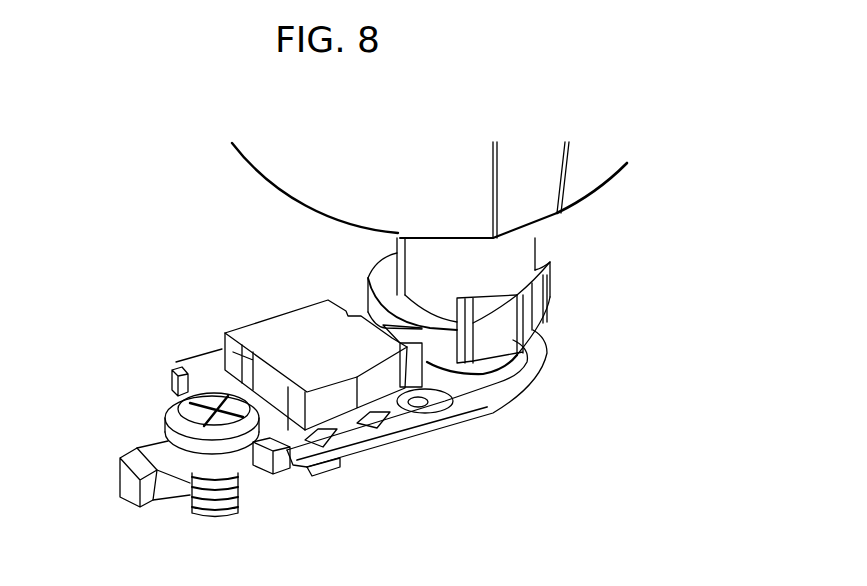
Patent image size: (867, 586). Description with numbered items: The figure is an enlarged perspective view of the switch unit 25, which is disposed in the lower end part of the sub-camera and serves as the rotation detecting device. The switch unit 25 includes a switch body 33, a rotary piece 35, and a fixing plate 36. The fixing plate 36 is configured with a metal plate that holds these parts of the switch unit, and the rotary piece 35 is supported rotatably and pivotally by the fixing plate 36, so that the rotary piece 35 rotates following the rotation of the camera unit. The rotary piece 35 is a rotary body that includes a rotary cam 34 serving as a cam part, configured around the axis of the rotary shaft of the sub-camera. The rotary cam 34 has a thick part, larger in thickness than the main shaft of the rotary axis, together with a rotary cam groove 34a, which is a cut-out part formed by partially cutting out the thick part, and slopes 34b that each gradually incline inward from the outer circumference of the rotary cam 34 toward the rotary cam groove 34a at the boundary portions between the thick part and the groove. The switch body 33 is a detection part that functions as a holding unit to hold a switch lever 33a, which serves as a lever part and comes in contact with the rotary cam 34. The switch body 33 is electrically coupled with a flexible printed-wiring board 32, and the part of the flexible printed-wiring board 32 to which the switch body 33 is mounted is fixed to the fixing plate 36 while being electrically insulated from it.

The switch unit 25 is at (487, 428).
The flexible printed-wiring board 32 is at (200, 363).
The switch body 33 is at (307, 322).
The switch lever 33a is at (417, 355).
The rotary cam 34 is at (555, 260).
The rotary cam groove 34a is at (497, 340).
The slopes 34b is at (540, 322).
The rotary piece 35 is at (545, 237).
The fixing plate 36 is at (374, 453).